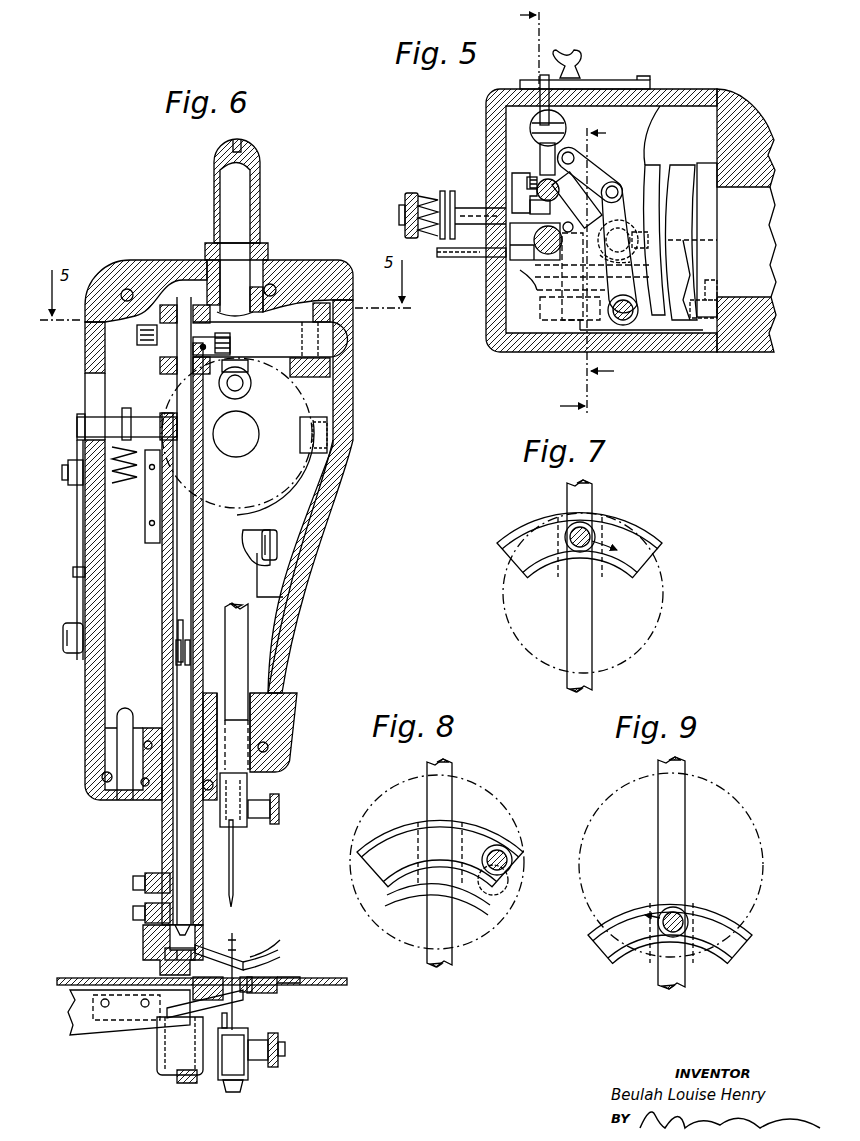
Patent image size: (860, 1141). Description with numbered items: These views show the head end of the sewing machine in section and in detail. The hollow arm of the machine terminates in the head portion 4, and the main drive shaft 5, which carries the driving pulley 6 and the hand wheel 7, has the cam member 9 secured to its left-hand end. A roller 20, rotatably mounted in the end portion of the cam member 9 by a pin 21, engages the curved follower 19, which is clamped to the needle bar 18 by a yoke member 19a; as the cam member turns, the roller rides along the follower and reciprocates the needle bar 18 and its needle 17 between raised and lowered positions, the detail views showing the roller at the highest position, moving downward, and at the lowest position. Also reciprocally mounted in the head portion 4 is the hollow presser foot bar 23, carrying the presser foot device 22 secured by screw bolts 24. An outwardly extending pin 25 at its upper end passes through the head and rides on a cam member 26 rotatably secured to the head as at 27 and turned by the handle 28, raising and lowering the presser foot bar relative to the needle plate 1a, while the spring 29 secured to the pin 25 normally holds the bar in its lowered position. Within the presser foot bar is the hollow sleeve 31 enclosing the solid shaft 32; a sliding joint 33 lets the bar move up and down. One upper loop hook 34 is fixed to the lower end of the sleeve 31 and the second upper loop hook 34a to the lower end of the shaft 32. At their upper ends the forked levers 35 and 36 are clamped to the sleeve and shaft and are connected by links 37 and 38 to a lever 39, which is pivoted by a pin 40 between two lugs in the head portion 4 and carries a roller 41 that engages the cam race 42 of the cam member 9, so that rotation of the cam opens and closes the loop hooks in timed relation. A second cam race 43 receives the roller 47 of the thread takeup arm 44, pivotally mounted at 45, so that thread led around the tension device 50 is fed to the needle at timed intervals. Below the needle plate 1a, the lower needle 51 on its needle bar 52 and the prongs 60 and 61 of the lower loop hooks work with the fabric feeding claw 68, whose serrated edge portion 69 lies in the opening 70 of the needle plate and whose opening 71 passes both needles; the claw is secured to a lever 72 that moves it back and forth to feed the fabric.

In FIG. 6, the needle plate 1a is at (72, 978).
In FIG. 6, the head portion 4 is at (290, 617).
In FIG. 5, the main drive shaft 5 is at (760, 212).
In FIG. 6, the main drive shaft 5 is at (236, 450).
In FIG. 5, the driving pulley 6 is at (543, 212).
In FIG. 5, the hand wheel 7 is at (605, 254).
In FIG. 5, the cam member 9 is at (710, 232).
In FIG. 6, the cam member 9 is at (312, 412).
In FIG. 7, the cam member 9 is at (661, 585).
In FIG. 8, the cam member 9 is at (492, 792).
In FIG. 9, the cam member 9 is at (716, 788).
In FIG. 6, the needle 17 is at (234, 876).
In FIG. 5, the needle bar 18 is at (548, 255).
In FIG. 6, the needle bar 18 is at (238, 663).
In FIG. 7, the needle bar 18 is at (582, 626).
In FIG. 8, the needle bar 18 is at (432, 773).
In FIG. 9, the needle bar 18 is at (672, 829).
In FIG. 5, the curved follower 19 is at (580, 288).
In FIG. 7, the curved follower 19 is at (650, 541).
In FIG. 8, the curved follower 19 is at (490, 831).
In FIG. 9, the curved follower 19 is at (741, 931).
In FIG. 5, the yoke member 19a is at (520, 270).
In FIG. 7, the yoke member 19a is at (556, 580).
In FIG. 8, the yoke member 19a is at (414, 841).
In FIG. 9, the yoke member 19a is at (647, 958).
In FIG. 5, the roller 20 is at (575, 290).
In FIG. 6, the roller 20 is at (245, 390).
In FIG. 7, the roller 20 is at (592, 527).
In FIG. 8, the roller 20 is at (506, 851).
In FIG. 9, the roller 20 is at (682, 912).
In FIG. 5, the pin 21 is at (630, 240).
In FIG. 6, the pin 21 is at (230, 388).
In FIG. 7, the pin 21 is at (566, 526).
In FIG. 8, the pin 21 is at (512, 859).
In FIG. 9, the pin 21 is at (662, 913).
In FIG. 6, the presser foot device 22 is at (270, 958).
In FIG. 6, the presser foot bar 23 is at (162, 839).
In FIG. 6, the screw bolts 24 is at (135, 913).
In FIG. 5, the pin 25 is at (539, 84).
In FIG. 6, the pin 25 is at (92, 424).
In FIG. 5, the cam member 26 is at (603, 83).
In FIG. 6, the cam member 26 is at (77, 531).
In FIG. 6, the pivot of cam member 27 is at (68, 470).
In FIG. 6, the handle 28 is at (63, 640).
In FIG. 5, the spring 29 is at (532, 127).
In FIG. 6, the spring 29 is at (125, 479).
In FIG. 6, the hollow sleeve 31 is at (177, 569).
In FIG. 6, the solid shaft 32 is at (176, 648).
In FIG. 6, the sliding joint 33 is at (185, 657).
In FIG. 6, the upper loop hook 34 is at (205, 946).
In FIG. 6, the second upper loop hook 34a is at (228, 954).
In FIG. 5, the forked lever 35 is at (538, 182).
In FIG. 6, the forked lever 35 is at (193, 345).
In FIG. 5, the forked lever 36 is at (530, 210).
In FIG. 6, the forked lever 36 is at (213, 328).
In FIG. 5, the link 37 is at (596, 175).
In FIG. 6, the link 37 is at (137, 334).
In FIG. 5, the link 38 is at (604, 214).
In FIG. 5, the lever 39 is at (627, 205).
In FIG. 6, the lever 39 is at (270, 300).
In FIG. 5, the pin 40 is at (626, 325).
In FIG. 6, the pin 40 is at (335, 331).
In FIG. 5, the roller 41 is at (634, 250).
In FIG. 5, the cam race 42 is at (648, 170).
In FIG. 5, the cam race 43 is at (686, 185).
In FIG. 5, the thread takeup arm 44 is at (475, 258).
In FIG. 6, the thread takeup arm 44 is at (272, 558).
In FIG. 6, the pivot of takeup arm 45 is at (278, 548).
In FIG. 6, the roller 47 is at (330, 449).
In FIG. 5, the tension device 50 is at (448, 192).
In FIG. 6, the lower needle 51 is at (237, 950).
In FIG. 6, the needle bar 52 is at (250, 1075).
In FIG. 6, the prong 60 is at (233, 1060).
In FIG. 6, the prong 61 is at (229, 1018).
In FIG. 6, the fabric feeding claw 68 is at (255, 994).
In FIG. 6, the serrated edge portion 69 is at (268, 978).
In FIG. 6, the opening 70 is at (292, 982).
In FIG. 6, the opening 71 is at (243, 1003).
In FIG. 6, the lever 72 is at (85, 1022).